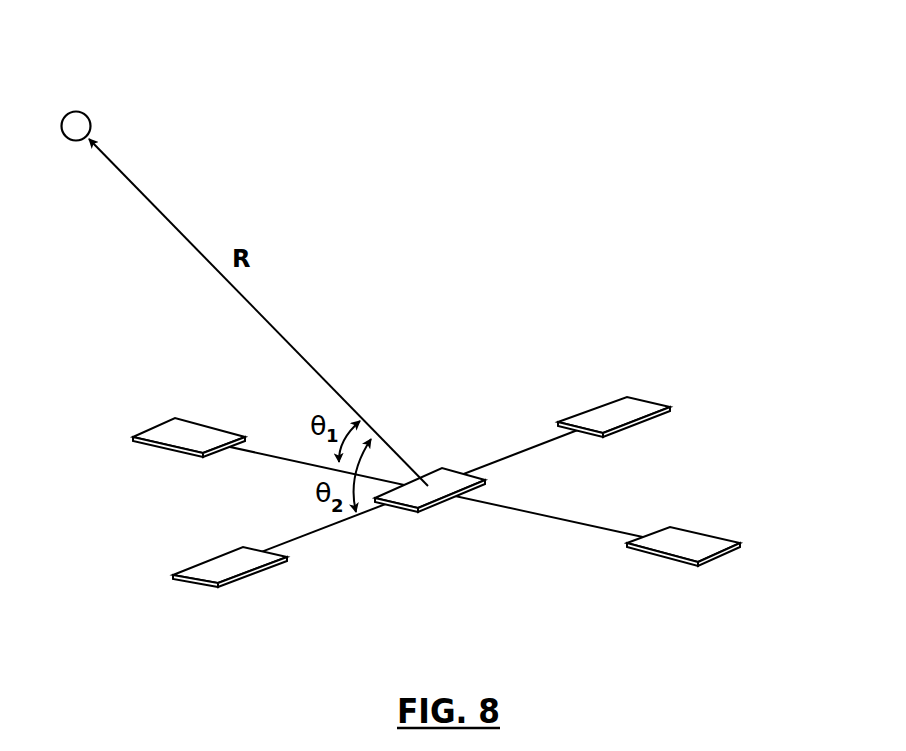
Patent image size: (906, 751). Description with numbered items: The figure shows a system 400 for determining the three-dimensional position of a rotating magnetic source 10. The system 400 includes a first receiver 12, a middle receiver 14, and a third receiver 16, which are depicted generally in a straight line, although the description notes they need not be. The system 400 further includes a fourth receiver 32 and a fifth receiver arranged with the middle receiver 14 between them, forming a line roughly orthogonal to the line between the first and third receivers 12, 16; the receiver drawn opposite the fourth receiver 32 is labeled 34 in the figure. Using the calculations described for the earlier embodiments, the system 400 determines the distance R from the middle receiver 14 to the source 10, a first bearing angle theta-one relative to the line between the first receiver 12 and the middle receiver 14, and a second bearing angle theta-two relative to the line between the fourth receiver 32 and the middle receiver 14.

The rotating source 10 is at (89, 115).
The first receiver 12 is at (433, 493).
The middle receiver 14 is at (177, 440).
The third receiver 16 is at (688, 537).
The fourth receiver 32 is at (243, 563).
The antenna element 34 is at (637, 403).
The system 400 is at (514, 155).